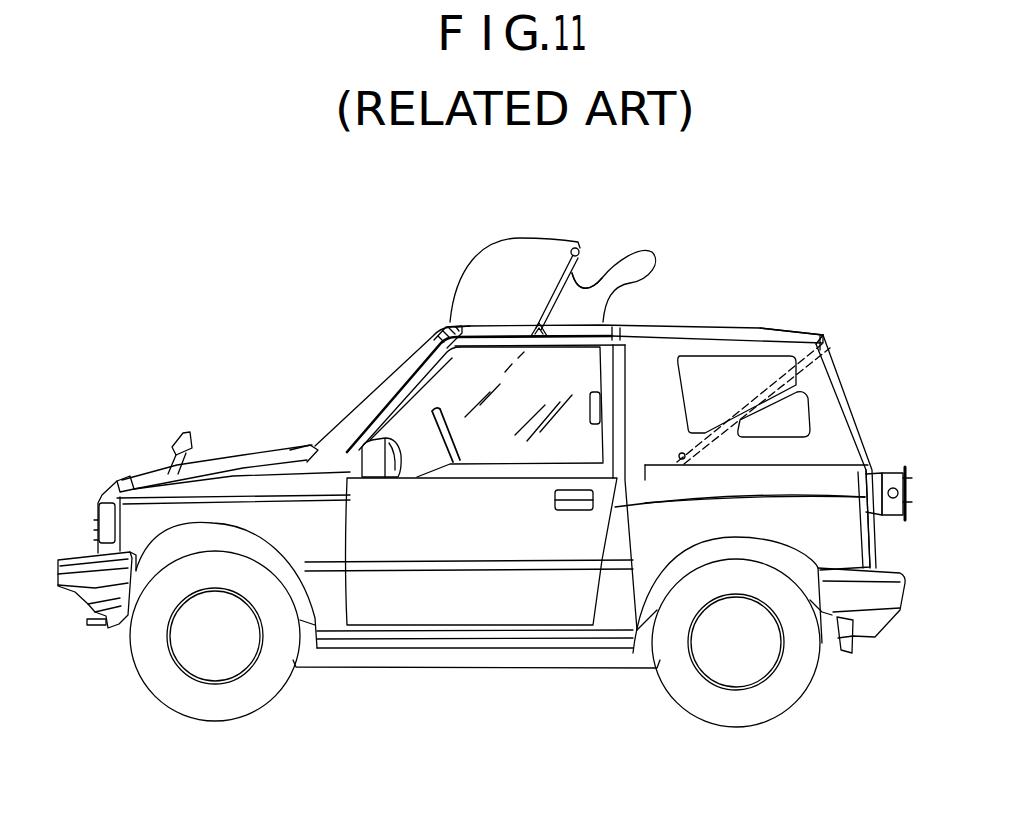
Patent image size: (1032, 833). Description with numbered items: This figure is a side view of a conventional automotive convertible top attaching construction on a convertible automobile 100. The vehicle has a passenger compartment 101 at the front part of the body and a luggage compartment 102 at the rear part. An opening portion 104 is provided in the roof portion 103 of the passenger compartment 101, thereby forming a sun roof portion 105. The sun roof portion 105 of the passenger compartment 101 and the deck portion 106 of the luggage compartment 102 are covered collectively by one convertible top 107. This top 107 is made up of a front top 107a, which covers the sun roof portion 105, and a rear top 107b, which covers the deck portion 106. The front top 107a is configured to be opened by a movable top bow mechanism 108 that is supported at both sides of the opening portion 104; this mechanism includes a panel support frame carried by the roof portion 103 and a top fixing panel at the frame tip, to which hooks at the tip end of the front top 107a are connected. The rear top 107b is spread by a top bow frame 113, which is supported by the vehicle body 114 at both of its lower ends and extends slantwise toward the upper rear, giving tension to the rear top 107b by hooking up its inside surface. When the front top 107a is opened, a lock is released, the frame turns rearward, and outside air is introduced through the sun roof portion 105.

The convertible automobile 100 is at (783, 335).
The passenger compartment 101 is at (443, 398).
The luggage compartment 102 is at (731, 368).
The roof portion 103 is at (447, 330).
The opening portion 104 is at (452, 318).
The sun roof portion 105 is at (530, 322).
The deck portion 106 is at (793, 417).
The convertible top 107 is at (767, 332).
The front top 107a is at (710, 237).
The rear top 107b is at (807, 335).
The movable top bow mechanism 108 is at (605, 267).
The top bow frame 113 is at (820, 350).
The vehicle body 114 is at (833, 482).